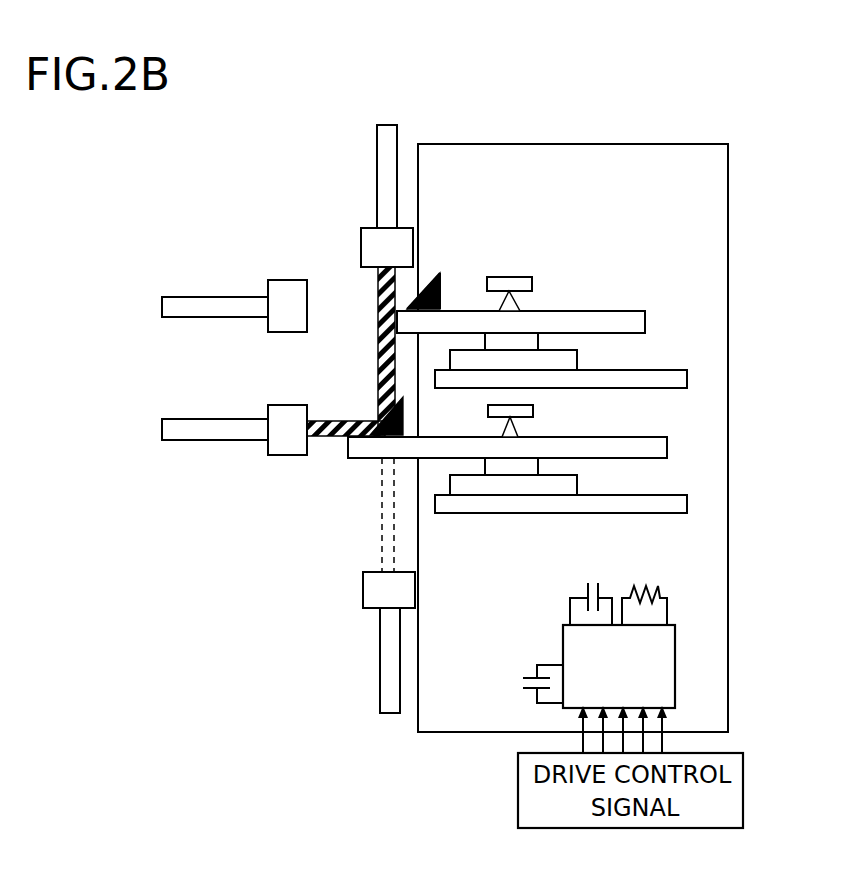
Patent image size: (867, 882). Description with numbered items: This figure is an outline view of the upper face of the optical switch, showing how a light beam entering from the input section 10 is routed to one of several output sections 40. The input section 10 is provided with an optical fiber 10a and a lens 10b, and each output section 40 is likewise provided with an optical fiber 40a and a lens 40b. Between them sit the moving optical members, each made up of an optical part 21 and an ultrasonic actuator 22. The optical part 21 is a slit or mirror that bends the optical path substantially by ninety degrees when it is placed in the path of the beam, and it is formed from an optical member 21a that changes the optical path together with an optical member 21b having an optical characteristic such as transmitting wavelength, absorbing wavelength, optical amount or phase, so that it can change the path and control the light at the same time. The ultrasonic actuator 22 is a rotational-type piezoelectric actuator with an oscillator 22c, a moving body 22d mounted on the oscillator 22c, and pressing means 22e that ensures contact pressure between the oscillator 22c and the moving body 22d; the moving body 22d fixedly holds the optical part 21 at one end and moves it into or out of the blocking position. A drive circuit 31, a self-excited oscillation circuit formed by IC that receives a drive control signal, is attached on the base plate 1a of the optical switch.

The base plate 1a is at (730, 220).
The input section 10 is at (363, 208).
The optical fiber 10a is at (398, 138).
The lens 10b is at (362, 258).
The optical part 21 is at (485, 222).
The optical member 21a is at (445, 310).
The optical member 21b is at (411, 310).
The ultrasonic actuator 22 is at (613, 283).
The oscillator 22c is at (670, 368).
The moving body 22d is at (647, 315).
The pressing means 22e is at (532, 282).
The drive circuit 31 is at (675, 670).
The output section 40 is at (273, 280).
The optical fiber 40a is at (378, 632).
The lens 40b is at (363, 595).